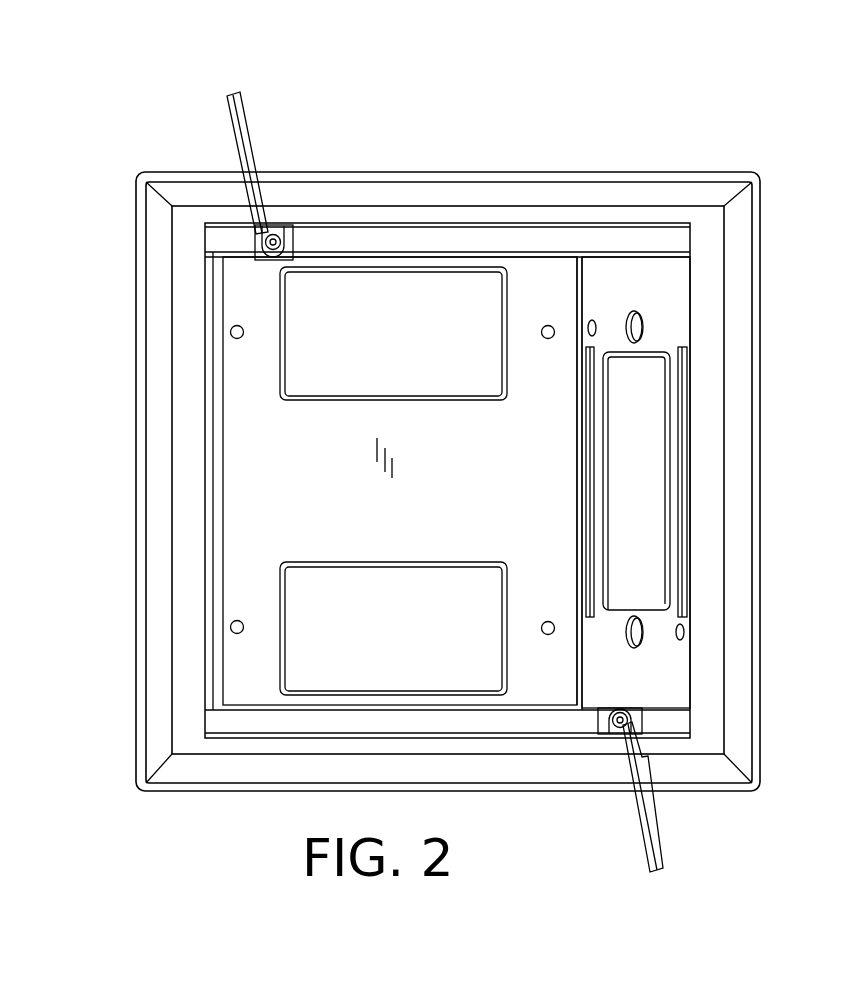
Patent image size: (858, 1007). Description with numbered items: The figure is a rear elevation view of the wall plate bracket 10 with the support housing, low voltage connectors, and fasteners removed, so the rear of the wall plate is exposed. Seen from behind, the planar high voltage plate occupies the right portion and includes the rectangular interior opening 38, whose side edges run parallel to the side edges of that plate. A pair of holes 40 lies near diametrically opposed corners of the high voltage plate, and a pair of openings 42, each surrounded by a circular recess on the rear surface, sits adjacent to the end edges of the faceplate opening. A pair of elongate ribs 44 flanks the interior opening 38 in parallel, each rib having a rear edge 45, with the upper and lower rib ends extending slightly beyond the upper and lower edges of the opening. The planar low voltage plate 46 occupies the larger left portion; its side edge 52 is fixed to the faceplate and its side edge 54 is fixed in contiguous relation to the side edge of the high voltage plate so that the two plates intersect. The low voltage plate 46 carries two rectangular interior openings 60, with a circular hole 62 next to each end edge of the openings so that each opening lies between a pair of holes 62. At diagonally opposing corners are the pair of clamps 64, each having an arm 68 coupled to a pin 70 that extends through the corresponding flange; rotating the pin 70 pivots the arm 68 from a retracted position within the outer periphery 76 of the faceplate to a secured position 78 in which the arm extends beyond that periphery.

The wall plate bracket 10 is at (678, 168).
The rectangular interior opening 38 is at (606, 466).
The holes 40 is at (688, 632).
The openings 42 is at (643, 316).
The elongate ribs 44 is at (574, 453).
The rear edge 45 is at (593, 382).
The low voltage plate 46 is at (298, 481).
The side edge 52 is at (205, 475).
The side edge 54 is at (578, 647).
The rectangular interior openings 60 is at (320, 268).
The circular hole 62 is at (237, 340).
The clamps 64 is at (226, 193).
The arm 68 is at (233, 148).
The pin 70 is at (273, 228).
The outer periphery 76 is at (135, 743).
The secured position 78 is at (237, 111).